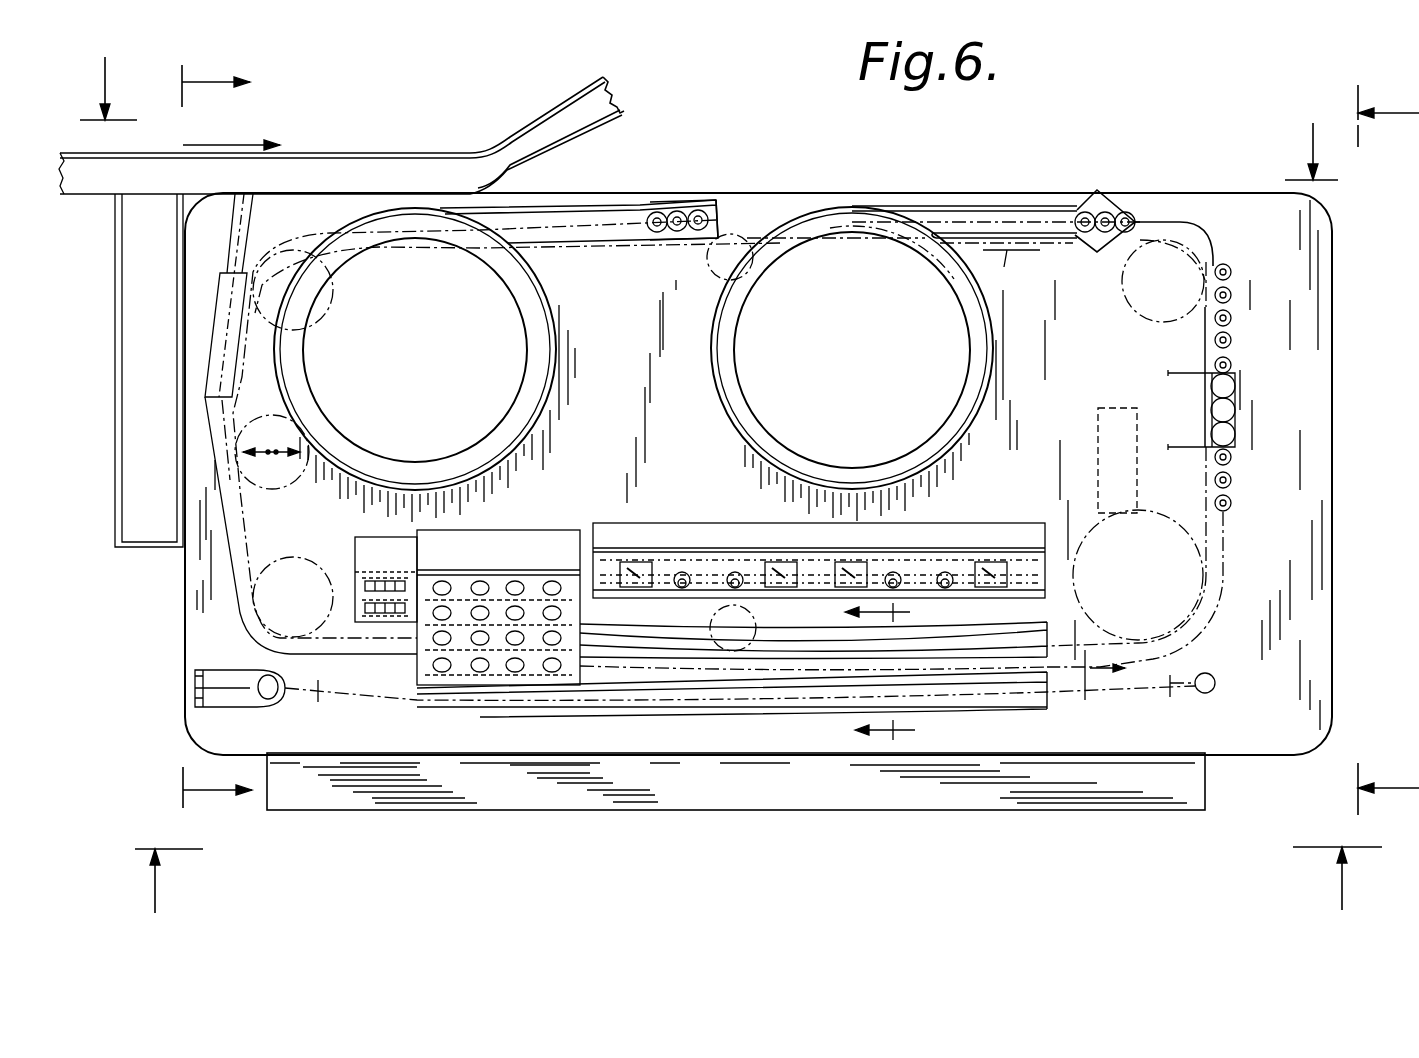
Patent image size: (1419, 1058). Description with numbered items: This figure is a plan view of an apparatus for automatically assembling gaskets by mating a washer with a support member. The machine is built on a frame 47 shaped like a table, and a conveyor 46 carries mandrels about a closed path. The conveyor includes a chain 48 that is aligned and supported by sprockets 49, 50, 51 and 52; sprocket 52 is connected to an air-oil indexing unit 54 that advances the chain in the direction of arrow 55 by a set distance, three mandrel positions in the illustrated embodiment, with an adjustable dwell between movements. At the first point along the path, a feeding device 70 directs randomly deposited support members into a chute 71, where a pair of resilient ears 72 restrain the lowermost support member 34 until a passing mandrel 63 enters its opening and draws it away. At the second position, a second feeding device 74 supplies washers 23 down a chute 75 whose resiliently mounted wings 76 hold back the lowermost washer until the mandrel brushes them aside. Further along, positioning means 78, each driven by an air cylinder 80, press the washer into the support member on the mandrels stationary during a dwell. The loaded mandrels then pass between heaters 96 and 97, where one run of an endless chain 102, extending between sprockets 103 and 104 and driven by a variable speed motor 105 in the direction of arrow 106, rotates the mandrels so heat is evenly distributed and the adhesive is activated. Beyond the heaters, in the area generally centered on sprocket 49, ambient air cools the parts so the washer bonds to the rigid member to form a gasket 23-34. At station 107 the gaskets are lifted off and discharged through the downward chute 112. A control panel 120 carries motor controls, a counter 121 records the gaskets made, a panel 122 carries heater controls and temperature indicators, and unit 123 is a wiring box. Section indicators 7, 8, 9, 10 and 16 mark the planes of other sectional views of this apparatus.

The downward chute 112 is at (235, 237).
The station 107 is at (198, 377).
The frame 47 is at (1333, 552).
The feeding device 70 is at (466, 366).
The second feeding device 74 is at (896, 341).
The chute 71 is at (572, 196).
The ears 72 is at (698, 212).
The support member 34 is at (680, 233).
The chute 75 is at (1000, 206).
The wings 76 is at (1108, 215).
The washer 23 is at (1100, 212).
The gasket 23-34 is at (1258, 277).
The arrow 55 is at (1011, 276).
The conveyor 46 is at (1167, 222).
The sprocket 51 is at (1128, 308).
The mandrel 63 is at (1232, 318).
The chain 48 is at (1204, 350).
The air cylinder 80 is at (1229, 410).
The positioning means 78 is at (1236, 386).
The air-oil indexing unit 54 is at (1098, 450).
The sprocket 52 is at (1176, 520).
The sprocket 50 is at (334, 293).
The sprocket 49 is at (300, 557).
The counter 121 is at (380, 545).
The control panel 120 is at (548, 530).
The panel 122 is at (680, 558).
The heater 96 is at (962, 640).
The heater 97 is at (990, 695).
The section line 16 is at (861, 673).
The variable speed motor 105 is at (215, 680).
The sprocket 103 is at (262, 690).
The endless chain 102 is at (322, 700).
The sprocket 104 is at (1215, 678).
The arrow 106 is at (1105, 672).
The wiring box 123 is at (732, 798).
The section line 8 is at (709, 118).
The section line 10 is at (238, 445).
The section line 9 is at (1388, 450).
The section line 7 is at (758, 881).